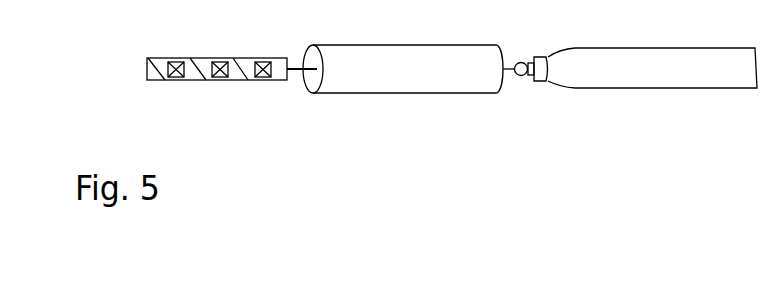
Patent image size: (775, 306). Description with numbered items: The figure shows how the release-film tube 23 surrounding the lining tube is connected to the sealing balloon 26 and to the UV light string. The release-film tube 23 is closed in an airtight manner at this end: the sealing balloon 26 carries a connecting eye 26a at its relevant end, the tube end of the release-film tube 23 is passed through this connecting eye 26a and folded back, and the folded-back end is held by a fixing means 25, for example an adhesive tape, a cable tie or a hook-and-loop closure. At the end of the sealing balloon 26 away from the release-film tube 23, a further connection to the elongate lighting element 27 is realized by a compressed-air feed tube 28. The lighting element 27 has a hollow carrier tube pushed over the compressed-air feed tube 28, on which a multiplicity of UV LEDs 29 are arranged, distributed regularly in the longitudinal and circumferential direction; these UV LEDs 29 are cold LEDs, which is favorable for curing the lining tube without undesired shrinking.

The release-film tube 23 is at (697, 88).
The fixing means 25 is at (537, 80).
The sealing balloon 26 is at (410, 85).
The connecting eye 26a is at (517, 80).
The lighting element 27 is at (157, 80).
The compressed-air feed tube 28 is at (297, 70).
The UV LEDs 29 is at (183, 80).